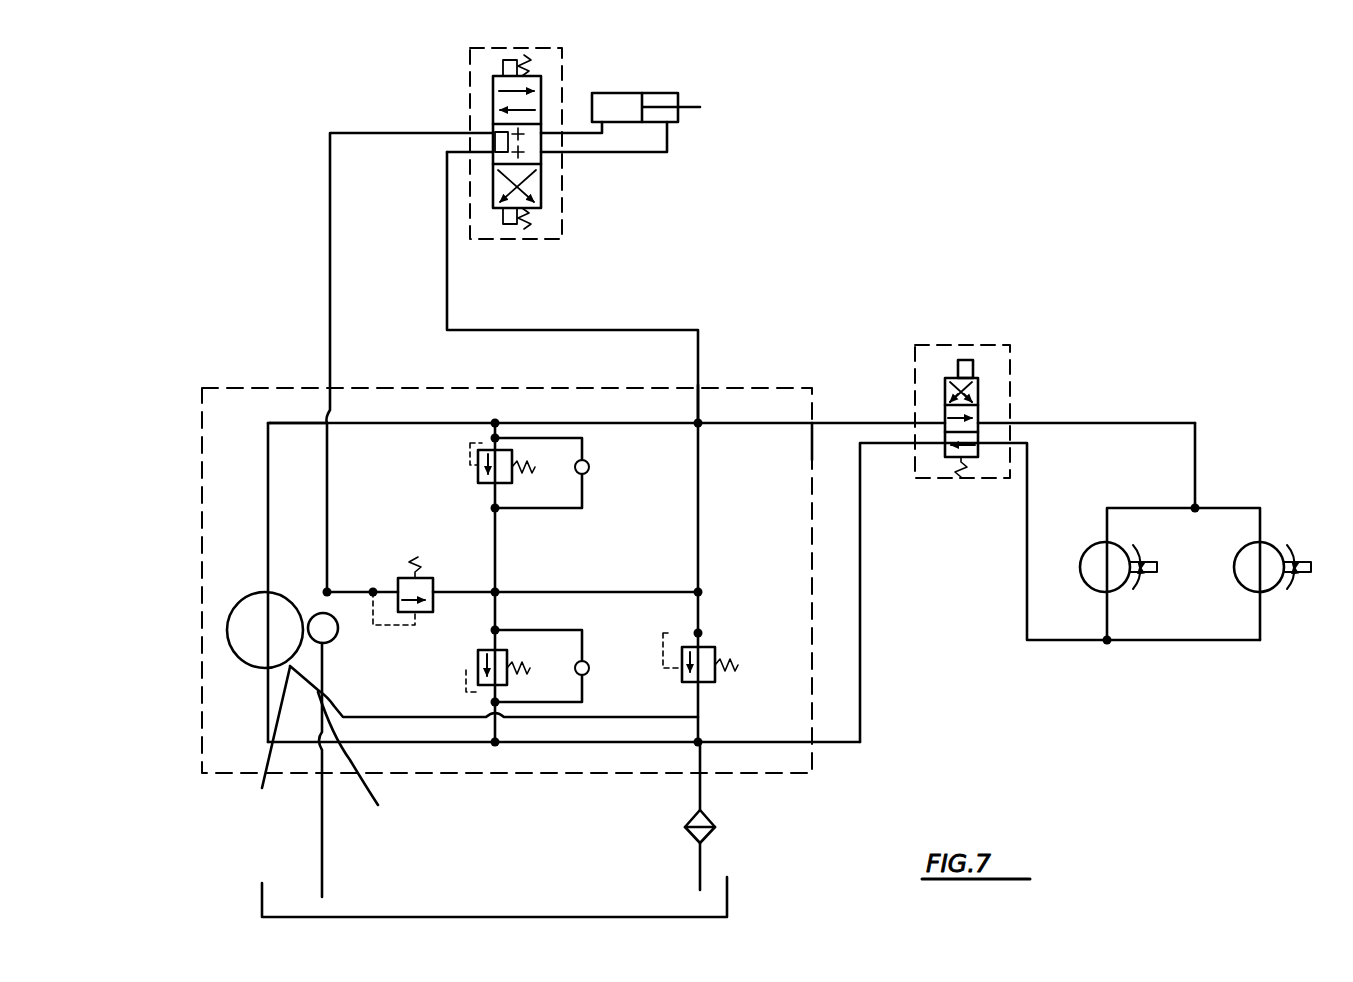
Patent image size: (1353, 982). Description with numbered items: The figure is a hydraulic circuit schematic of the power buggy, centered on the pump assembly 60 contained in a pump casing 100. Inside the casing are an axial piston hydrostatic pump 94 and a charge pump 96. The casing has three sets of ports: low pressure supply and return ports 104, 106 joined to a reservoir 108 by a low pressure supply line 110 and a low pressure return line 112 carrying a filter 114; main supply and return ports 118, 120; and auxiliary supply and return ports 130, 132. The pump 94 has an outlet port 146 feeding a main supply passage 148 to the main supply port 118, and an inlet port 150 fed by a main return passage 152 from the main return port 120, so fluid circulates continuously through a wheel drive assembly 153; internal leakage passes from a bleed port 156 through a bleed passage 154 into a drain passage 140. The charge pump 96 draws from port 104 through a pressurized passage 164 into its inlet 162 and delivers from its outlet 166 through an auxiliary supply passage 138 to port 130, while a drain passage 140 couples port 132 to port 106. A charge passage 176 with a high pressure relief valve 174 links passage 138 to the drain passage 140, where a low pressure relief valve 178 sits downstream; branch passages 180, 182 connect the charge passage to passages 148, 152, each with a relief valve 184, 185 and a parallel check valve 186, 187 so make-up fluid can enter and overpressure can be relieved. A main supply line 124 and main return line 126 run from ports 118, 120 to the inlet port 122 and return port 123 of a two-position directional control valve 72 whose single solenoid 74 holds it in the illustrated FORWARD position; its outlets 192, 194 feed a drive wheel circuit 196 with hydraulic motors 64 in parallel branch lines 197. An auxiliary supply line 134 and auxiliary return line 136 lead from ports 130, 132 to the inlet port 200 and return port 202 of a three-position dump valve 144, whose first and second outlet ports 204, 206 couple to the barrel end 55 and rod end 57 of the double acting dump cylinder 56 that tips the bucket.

The barrel end 55 is at (627, 100).
The dump cylinder 56 is at (660, 90).
The rod end 57 is at (678, 100).
The pump assembly 60 is at (285, 582).
The hydraulic motor 64 is at (1092, 548).
The directional control valve 72 is at (975, 398).
The solenoid 74 is at (968, 360).
The axial piston hydrostatic pump 94 is at (228, 630).
The charge pump 96 is at (338, 634).
The pump casing 100 is at (798, 388).
The low pressure supply port 104 is at (322, 775).
The low pressure return port 106 is at (698, 776).
The reservoir 108 is at (729, 895).
The low pressure supply line 110 is at (322, 868).
The low pressure return line 112 is at (703, 810).
The filter 114 is at (716, 836).
The main supply port 118 is at (816, 420).
The main return port 120 is at (812, 742).
The inlet port 122 is at (945, 420).
The return port 123 is at (945, 447).
The main supply line 124 is at (812, 428).
The main return line 126 is at (862, 690).
The auxiliary supply port 130 is at (327, 392).
The auxiliary return port 132 is at (700, 392).
The auxiliary supply line 134 is at (330, 198).
The auxiliary return line 136 is at (660, 330).
The auxiliary supply passage 138 is at (327, 458).
The drain passage 140 is at (702, 530).
The dump valve 144 is at (540, 200).
The outlet port 146 is at (258, 596).
The main supply passage 148 is at (268, 433).
The inlet port 150 is at (252, 666).
The main return passage 152 is at (268, 712).
The wheel drive assembly 153 is at (1330, 445).
The bleed passage 154 is at (340, 716).
The bleed port 156 is at (261, 740).
The inlet 162 is at (330, 644).
The pressurized passage 164 is at (372, 755).
The outlet 166 is at (318, 606).
The high pressure relief valve 174 is at (424, 578).
The charge passage 176 is at (612, 590).
The low pressure relief valve 178 is at (715, 648).
The branch passage 180 is at (497, 546).
The branch passage 182 is at (497, 620).
The relief valve 184 is at (478, 470).
The relief valve 185 is at (478, 660).
The check valve 186 is at (589, 464).
The check valve 187 is at (589, 676).
The outlet 192 is at (985, 420).
The outlet 194 is at (985, 440).
The drive wheel circuit 196 is at (1160, 646).
The branch line 197 is at (1142, 508).
The inlet port 200 is at (493, 135).
The return port 202 is at (493, 146).
The first outlet port 204 is at (541, 133).
The second outlet port 206 is at (543, 153).